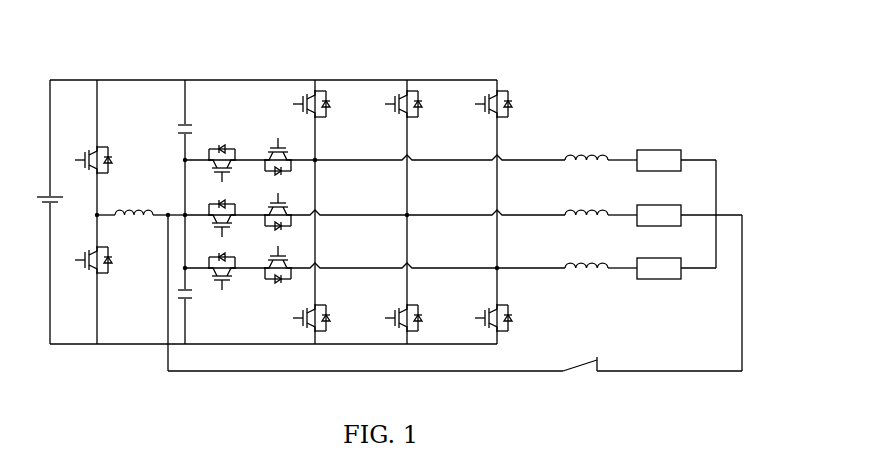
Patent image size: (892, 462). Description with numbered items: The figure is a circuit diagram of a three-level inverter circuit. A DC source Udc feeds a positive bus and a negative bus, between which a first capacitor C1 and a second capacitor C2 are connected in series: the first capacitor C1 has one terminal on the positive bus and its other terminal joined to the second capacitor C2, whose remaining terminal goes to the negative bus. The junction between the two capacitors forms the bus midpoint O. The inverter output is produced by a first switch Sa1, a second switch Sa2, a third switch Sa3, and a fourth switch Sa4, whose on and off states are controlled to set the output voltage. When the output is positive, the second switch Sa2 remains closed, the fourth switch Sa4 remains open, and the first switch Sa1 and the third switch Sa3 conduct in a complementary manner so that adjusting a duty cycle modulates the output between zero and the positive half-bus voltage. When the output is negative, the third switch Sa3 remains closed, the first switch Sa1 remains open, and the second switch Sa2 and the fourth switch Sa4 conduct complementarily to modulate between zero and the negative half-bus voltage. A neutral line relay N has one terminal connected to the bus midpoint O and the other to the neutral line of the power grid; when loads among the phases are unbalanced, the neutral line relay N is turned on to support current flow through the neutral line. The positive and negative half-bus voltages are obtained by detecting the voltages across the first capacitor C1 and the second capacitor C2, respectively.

The DC voltage source Udc is at (37, 212).
The first capacitor C1 is at (175, 130).
The second capacitor C2 is at (192, 296).
The bus midpoint O is at (174, 292).
The first switch Sa1 is at (300, 104).
The second switch Sa2 is at (222, 209).
The third switch Sa3 is at (281, 205).
The fourth switch Sa4 is at (302, 320).
The neutral line relay N is at (455, 376).